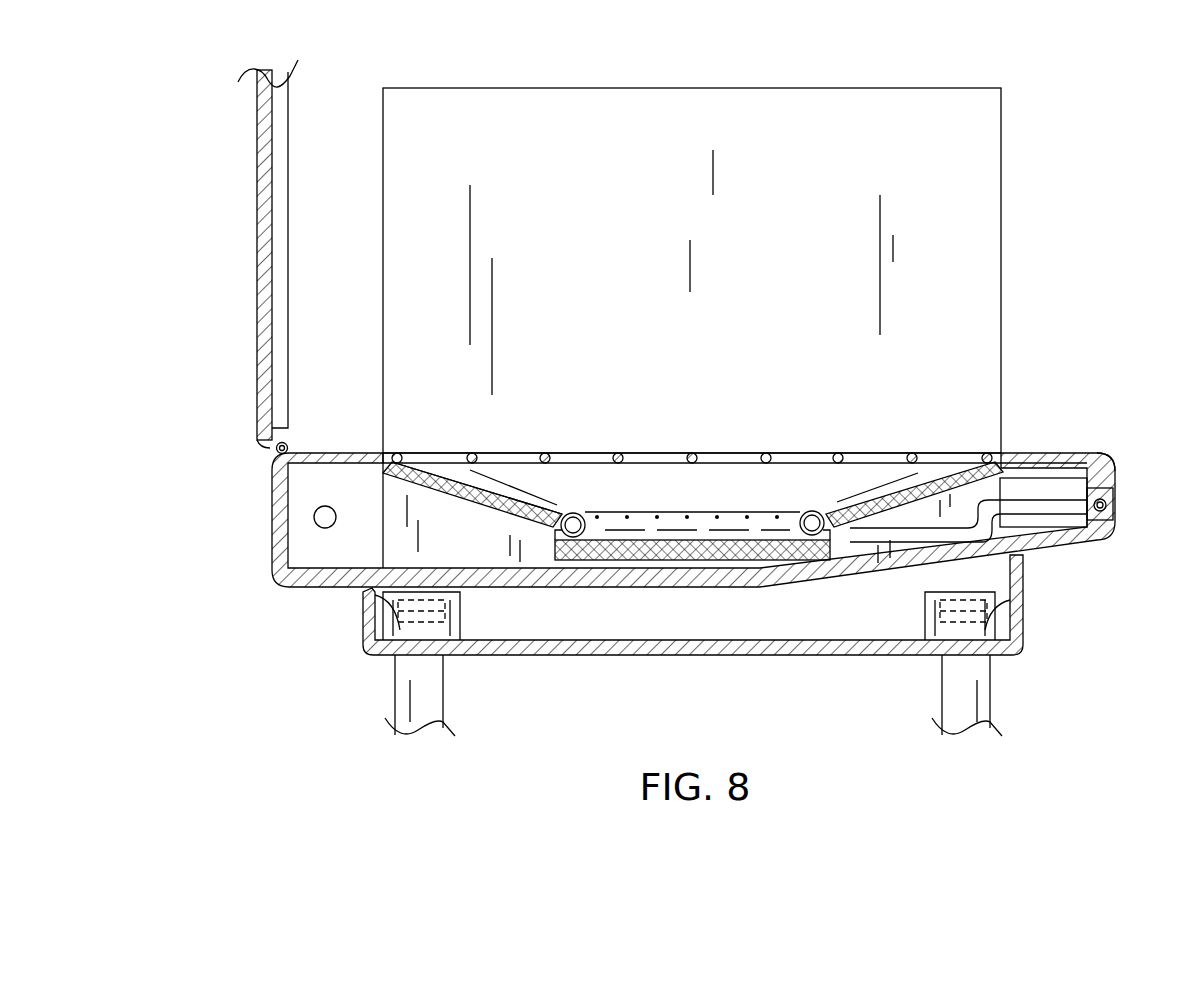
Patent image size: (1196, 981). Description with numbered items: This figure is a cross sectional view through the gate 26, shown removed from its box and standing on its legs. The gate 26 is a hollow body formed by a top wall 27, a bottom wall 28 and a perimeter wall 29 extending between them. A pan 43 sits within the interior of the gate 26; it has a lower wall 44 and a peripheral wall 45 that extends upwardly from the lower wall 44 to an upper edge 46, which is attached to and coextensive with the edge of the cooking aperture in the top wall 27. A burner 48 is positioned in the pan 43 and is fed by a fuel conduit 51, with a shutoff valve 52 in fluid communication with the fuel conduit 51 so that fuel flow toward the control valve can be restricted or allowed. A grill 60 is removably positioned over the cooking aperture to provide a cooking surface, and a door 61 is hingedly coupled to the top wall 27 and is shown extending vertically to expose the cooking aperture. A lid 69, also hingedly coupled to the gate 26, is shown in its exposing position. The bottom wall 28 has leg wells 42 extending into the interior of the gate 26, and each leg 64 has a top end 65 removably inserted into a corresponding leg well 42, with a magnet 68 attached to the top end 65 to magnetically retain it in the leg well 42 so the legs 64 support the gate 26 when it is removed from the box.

The gate 26 is at (1115, 455).
The top wall 27 is at (1050, 453).
The bottom wall 28 is at (575, 655).
The perimeter wall 29 is at (272, 508).
The leg wells 42 is at (460, 625).
The pan 43 is at (452, 498).
The lower wall 44 is at (710, 560).
The peripheral wall 45 is at (1000, 525).
The upper edge 46 is at (385, 455).
The burner 48 is at (770, 540).
The fuel conduit 51 is at (1085, 463).
The shutoff valve 52 is at (1113, 530).
The grill 60 is at (765, 452).
The doors 61 is at (440, 88).
The legs 64 is at (395, 680).
The top end 65 is at (395, 625).
The magnets 68 is at (395, 608).
The lid 69 is at (258, 246).